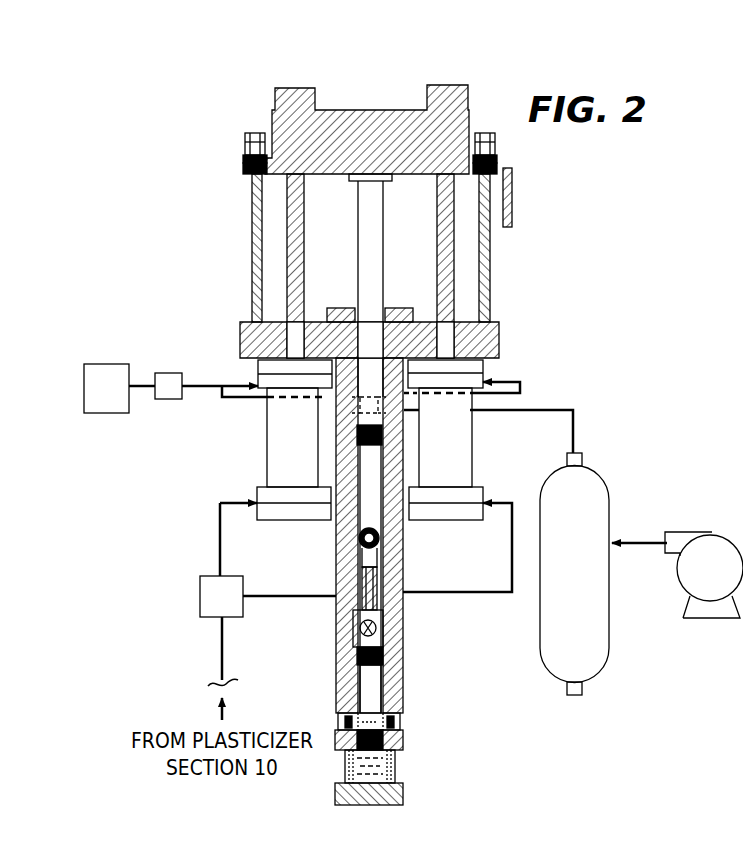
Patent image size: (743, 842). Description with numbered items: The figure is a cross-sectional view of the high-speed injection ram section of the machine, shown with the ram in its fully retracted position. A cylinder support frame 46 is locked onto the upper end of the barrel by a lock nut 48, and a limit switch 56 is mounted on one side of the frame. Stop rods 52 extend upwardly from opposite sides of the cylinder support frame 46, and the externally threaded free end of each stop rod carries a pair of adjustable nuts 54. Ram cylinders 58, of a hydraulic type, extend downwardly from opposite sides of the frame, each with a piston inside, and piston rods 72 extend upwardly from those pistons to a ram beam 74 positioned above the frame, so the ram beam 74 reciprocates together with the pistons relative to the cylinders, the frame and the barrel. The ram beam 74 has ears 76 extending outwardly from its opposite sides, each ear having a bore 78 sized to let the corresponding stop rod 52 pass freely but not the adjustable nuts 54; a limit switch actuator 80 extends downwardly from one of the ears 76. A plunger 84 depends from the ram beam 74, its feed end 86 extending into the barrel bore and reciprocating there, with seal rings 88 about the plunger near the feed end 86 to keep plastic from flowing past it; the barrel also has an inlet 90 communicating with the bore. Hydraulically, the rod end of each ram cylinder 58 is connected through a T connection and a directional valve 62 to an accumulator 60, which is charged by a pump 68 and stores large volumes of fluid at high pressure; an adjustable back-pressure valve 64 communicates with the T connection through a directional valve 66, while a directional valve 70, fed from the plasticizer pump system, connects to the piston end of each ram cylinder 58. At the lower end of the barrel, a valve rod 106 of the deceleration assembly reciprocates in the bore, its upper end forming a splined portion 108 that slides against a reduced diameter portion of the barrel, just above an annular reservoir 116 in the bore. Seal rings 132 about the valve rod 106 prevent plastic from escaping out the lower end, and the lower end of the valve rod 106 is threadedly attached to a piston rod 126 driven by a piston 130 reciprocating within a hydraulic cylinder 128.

The ram beam 74 is at (380, 110).
The adjustable nuts 54 is at (250, 136).
The bore 78 is at (243, 158).
The ears 76 is at (243, 168).
The limit switch actuator 80 is at (514, 192).
The stop rods 52 is at (252, 236).
The piston rods 72 is at (304, 222).
The plunger 84 is at (374, 208).
The lock nut 48 is at (340, 306).
The cylinder support frame 46 is at (418, 306).
The limit switch 56 is at (499, 330).
The ram cylinders 58 is at (267, 464).
The feed end 86 is at (403, 466).
The directional valve 62 is at (360, 405).
The seal rings 88 is at (357, 440).
The splined portion 108 is at (378, 557).
The inlet 90 is at (360, 556).
The annular reservoir 116 is at (350, 618).
The seal rings 132 is at (403, 648).
The valve rod 106 is at (374, 696).
The piston rod 126 is at (396, 752).
The piston 130 is at (352, 775).
The hydraulic cylinder 128 is at (403, 792).
The adjustable back-pressure valve 64 is at (105, 364).
The directional valve 66 is at (168, 373).
The directional valve 70 is at (200, 596).
The accumulator 60 is at (566, 662).
The pump 68 is at (683, 580).